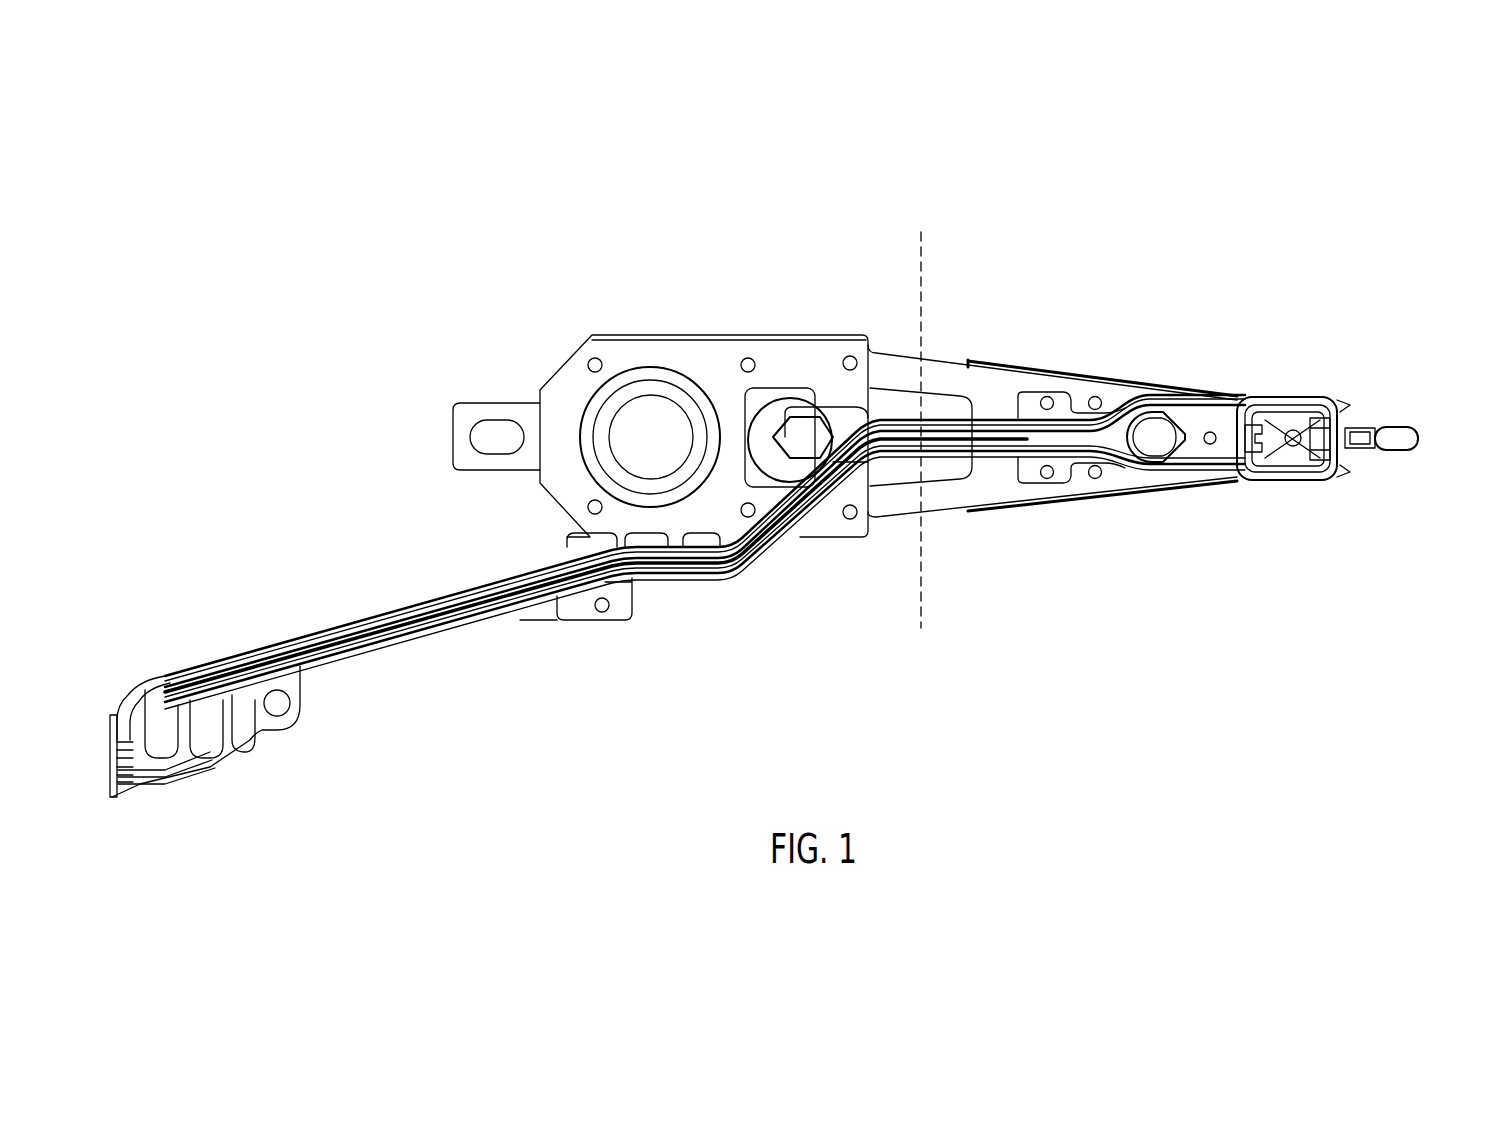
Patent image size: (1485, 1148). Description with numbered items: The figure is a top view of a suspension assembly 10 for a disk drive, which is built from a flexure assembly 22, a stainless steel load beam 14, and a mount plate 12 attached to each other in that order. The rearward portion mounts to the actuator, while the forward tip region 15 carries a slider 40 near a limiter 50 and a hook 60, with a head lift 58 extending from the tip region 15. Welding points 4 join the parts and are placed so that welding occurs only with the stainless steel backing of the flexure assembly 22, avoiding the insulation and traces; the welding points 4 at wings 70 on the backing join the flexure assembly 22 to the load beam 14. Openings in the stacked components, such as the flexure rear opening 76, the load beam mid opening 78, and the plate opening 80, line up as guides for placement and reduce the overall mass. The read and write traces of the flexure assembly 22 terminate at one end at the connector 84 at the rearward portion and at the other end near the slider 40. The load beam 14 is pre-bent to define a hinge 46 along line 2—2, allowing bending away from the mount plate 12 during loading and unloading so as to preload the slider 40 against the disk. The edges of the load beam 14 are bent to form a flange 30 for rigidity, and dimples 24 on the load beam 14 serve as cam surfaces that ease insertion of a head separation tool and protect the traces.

The suspension assembly 10 is at (404, 240).
The mount plate 12 is at (566, 388).
The load beam 14 is at (458, 418).
The welding points 4 is at (592, 360).
The line 2— 2 is at (921, 432).
The flexure assembly 22 is at (413, 623).
The dimples 24 is at (1097, 397).
The flange 30 is at (968, 362).
The slider 40 is at (1250, 483).
The hinge 46 is at (906, 525).
The limiter 50 is at (1255, 432).
The head lift 58 is at (1404, 424).
The hook 60 is at (1227, 458).
The wings 70 is at (1030, 397).
The flexure rear opening 76 is at (818, 400).
The load beam mid opening 78 is at (738, 392).
The plate opening 80 is at (804, 432).
The connector 84 is at (207, 735).
The tip region 15 is at (1364, 425).